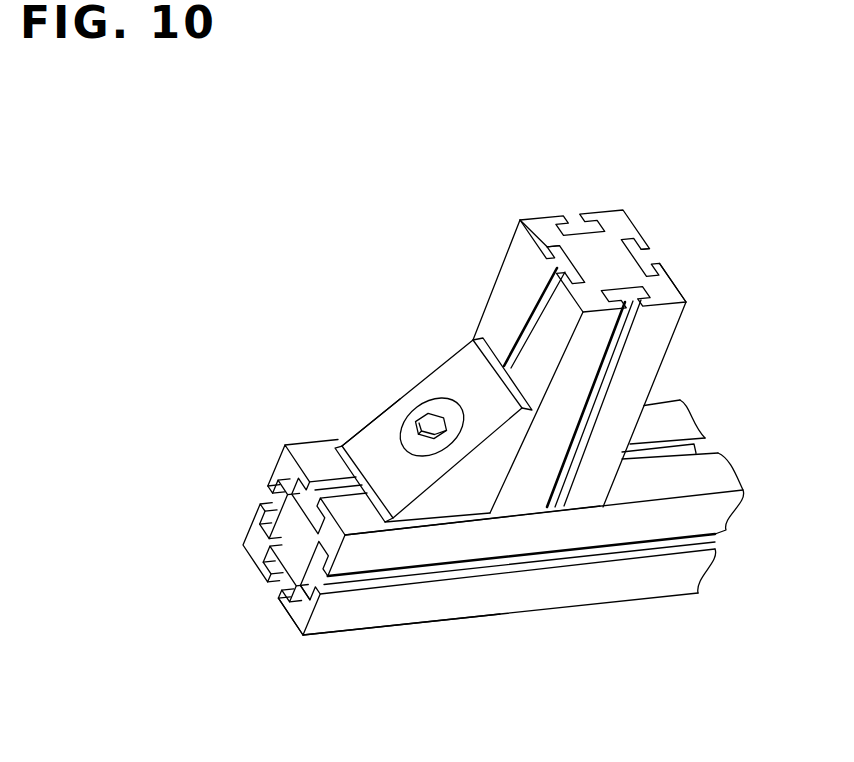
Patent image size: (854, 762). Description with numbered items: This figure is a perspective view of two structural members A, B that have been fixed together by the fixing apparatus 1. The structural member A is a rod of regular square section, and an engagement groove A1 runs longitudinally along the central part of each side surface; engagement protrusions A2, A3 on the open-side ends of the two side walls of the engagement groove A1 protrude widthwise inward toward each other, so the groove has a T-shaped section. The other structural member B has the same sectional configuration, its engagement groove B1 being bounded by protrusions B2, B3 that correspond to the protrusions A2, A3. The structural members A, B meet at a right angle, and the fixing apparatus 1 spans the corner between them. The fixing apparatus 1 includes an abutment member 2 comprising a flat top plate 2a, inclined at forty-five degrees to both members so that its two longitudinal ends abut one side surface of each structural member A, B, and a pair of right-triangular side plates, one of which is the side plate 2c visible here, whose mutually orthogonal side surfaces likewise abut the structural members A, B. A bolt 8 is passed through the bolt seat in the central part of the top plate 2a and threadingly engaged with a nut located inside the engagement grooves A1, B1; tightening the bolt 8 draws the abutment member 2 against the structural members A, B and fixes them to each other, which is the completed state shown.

The structural member A is at (468, 546).
The engagement groove A1 is at (267, 500).
The engagement protrusion A2 is at (313, 482).
The engagement protrusion A3 is at (300, 604).
The structural member B is at (608, 335).
The engagement groove B1 is at (572, 218).
The protrusion B2 is at (552, 264).
The protrusion B3 is at (552, 258).
The fixing apparatus 1 is at (427, 474).
The abutment member 2 is at (427, 474).
The top plate 2a is at (362, 432).
The side plate 2c is at (480, 502).
The bolt 8 is at (422, 412).